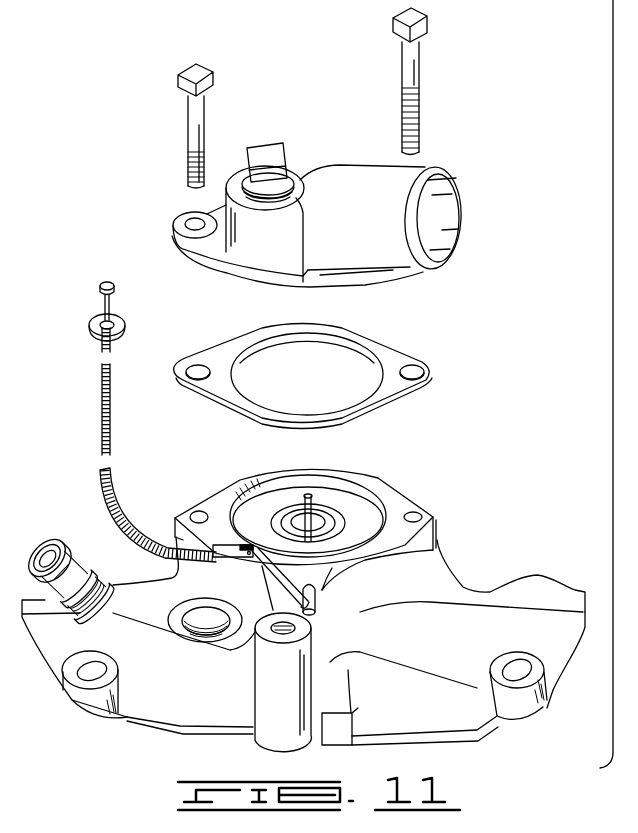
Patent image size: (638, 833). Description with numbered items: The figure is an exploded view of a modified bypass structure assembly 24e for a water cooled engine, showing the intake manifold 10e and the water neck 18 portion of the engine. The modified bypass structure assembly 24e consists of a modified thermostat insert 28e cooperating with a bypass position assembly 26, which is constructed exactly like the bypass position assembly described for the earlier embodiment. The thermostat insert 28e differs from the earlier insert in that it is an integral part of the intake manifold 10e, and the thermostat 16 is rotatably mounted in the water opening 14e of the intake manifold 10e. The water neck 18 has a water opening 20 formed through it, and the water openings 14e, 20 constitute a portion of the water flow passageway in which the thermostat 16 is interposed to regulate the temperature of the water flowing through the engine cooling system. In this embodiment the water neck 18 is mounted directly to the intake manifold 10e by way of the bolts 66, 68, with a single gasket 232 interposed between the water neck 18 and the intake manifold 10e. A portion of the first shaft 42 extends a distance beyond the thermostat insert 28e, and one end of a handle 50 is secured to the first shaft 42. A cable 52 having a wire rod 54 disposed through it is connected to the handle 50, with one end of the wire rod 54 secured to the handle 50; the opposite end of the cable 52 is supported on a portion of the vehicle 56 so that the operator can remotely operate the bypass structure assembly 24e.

The intake manifold 10e is at (433, 505).
The water opening 14e is at (332, 485).
The thermostat 16 is at (337, 517).
The water neck 18 is at (393, 263).
The water opening 20 is at (450, 237).
The modified bypass structure assembly 24e is at (253, 492).
The bypass position assembly 26 is at (257, 573).
The modified thermostat insert 28e is at (333, 572).
The first shaft 42 is at (315, 618).
The handle 50 is at (233, 655).
The cable 52 is at (102, 500).
The wire rod 54 is at (110, 308).
The portion of the vehicle 56 is at (90, 320).
The bolt 66 is at (205, 80).
The bolt 68 is at (423, 24).
The gasket 232 is at (407, 358).